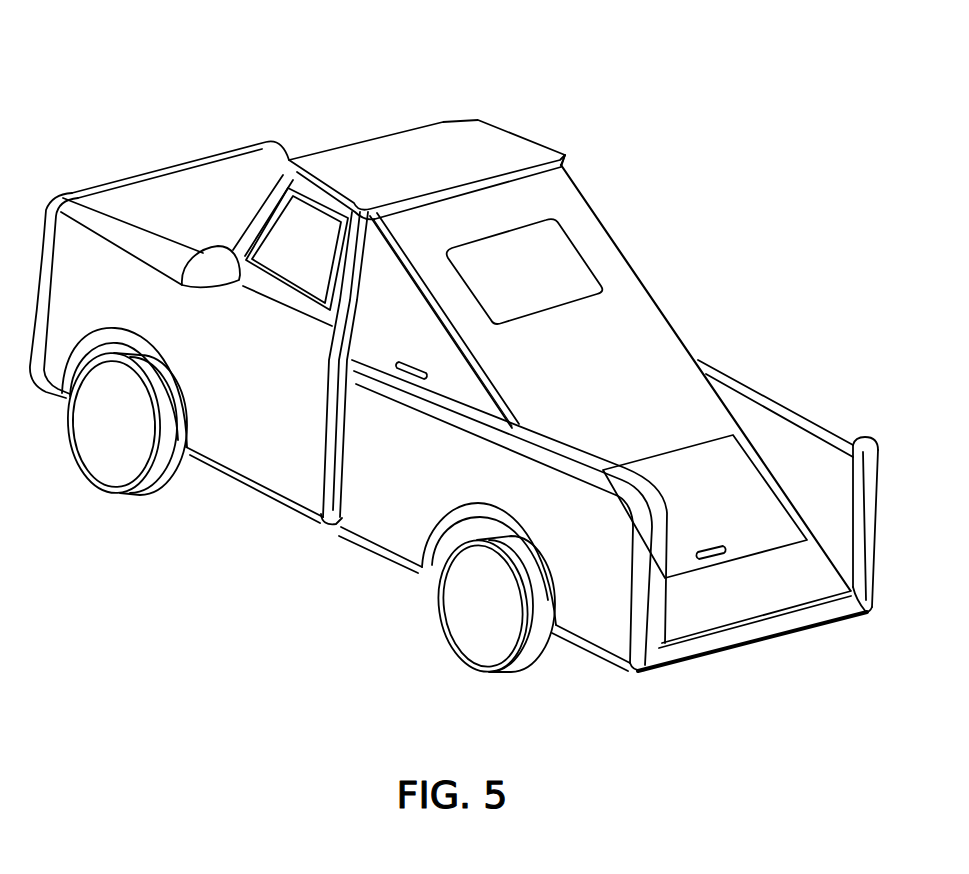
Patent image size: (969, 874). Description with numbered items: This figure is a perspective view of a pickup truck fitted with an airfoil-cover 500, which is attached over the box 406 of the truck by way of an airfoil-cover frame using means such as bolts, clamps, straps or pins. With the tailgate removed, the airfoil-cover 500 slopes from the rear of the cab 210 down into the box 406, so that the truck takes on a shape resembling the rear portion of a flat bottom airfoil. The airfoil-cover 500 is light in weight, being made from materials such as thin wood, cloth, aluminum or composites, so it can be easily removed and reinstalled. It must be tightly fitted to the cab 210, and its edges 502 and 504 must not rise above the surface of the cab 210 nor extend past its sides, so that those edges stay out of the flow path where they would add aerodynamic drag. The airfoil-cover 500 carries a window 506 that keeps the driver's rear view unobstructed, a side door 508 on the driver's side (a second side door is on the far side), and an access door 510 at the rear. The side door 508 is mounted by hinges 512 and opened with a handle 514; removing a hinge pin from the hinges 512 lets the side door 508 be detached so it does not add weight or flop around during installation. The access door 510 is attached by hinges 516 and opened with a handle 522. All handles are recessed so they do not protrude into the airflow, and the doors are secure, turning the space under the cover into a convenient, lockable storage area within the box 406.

The cab 210 is at (385, 160).
The edge of airfoil-cover 502 is at (488, 170).
The airfoil-cover 500 is at (575, 180).
The edge of airfoil-cover 504 is at (340, 271).
The window 506 is at (562, 288).
The side door 508 is at (372, 320).
The access door 510 is at (728, 517).
The hinges 512 is at (449, 361).
The handles 514 is at (382, 375).
The hinges 516 is at (683, 430).
The handle 522 is at (728, 568).
The box 406 is at (575, 563).